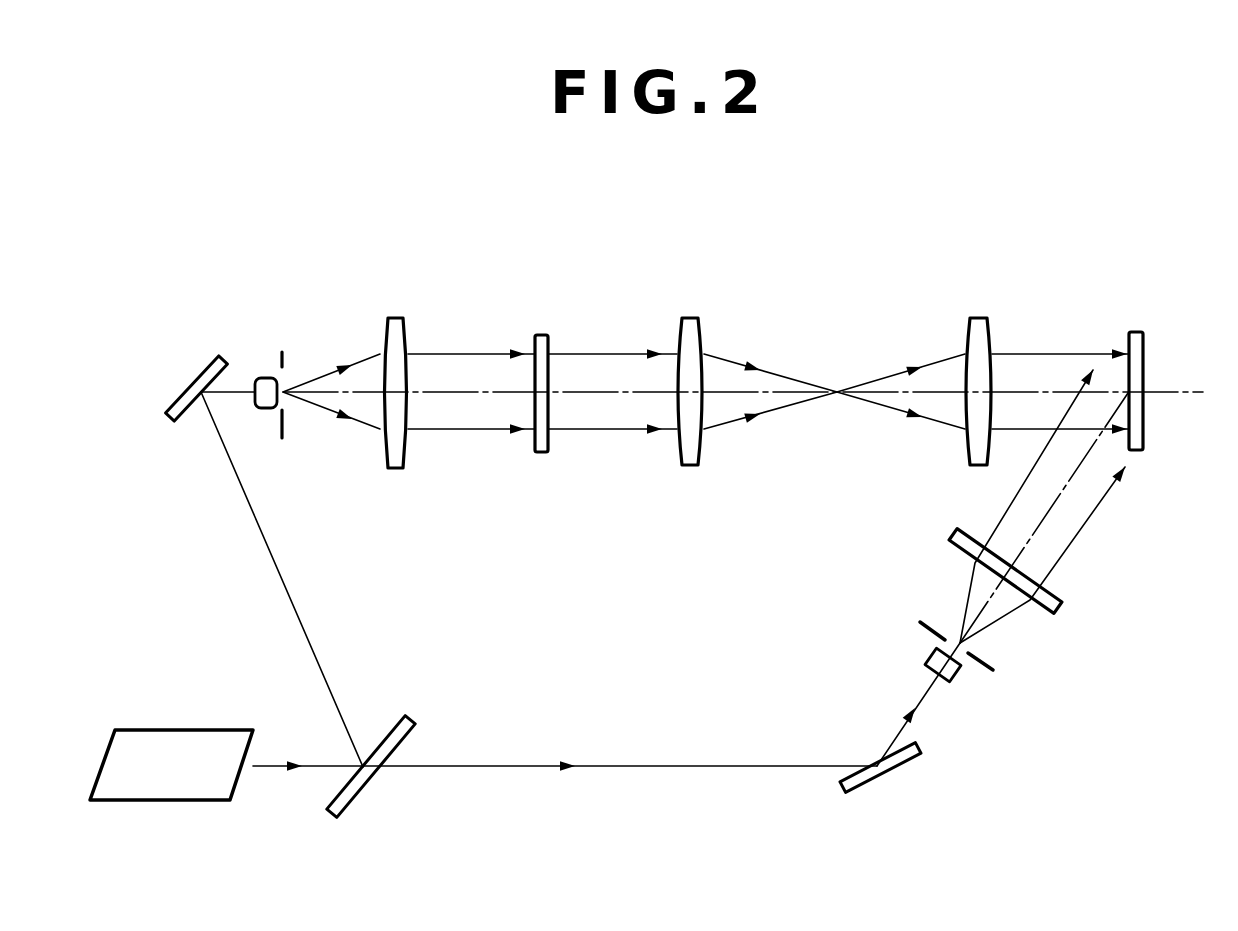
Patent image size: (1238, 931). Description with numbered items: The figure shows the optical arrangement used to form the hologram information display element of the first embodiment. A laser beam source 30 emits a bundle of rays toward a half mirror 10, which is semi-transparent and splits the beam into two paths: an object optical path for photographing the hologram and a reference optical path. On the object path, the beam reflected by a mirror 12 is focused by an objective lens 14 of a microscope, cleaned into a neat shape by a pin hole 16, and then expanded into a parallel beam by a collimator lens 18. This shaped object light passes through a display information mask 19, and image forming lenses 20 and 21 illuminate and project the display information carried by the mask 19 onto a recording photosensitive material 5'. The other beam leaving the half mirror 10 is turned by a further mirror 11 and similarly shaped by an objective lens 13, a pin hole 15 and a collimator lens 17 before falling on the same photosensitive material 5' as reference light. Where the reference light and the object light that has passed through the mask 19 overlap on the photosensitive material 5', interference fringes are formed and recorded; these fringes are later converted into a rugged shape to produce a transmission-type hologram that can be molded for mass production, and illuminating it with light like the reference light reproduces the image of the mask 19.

The laser beam source 30 is at (176, 730).
The half mirror 10 is at (402, 717).
The mirror 11 is at (866, 773).
The mirror 12 is at (207, 355).
The objective lens 13 is at (957, 677).
The objective lens 14 is at (263, 377).
The pin hole 15 is at (993, 663).
The pin hole 16 is at (281, 350).
The collimator lens 17 is at (1075, 593).
The collimator lens 18 is at (397, 318).
The display information mask 19 is at (543, 335).
The image forming lens 20 is at (690, 318).
The image forming lens 21 is at (980, 318).
The recording photosensitive material 5' is at (1140, 335).